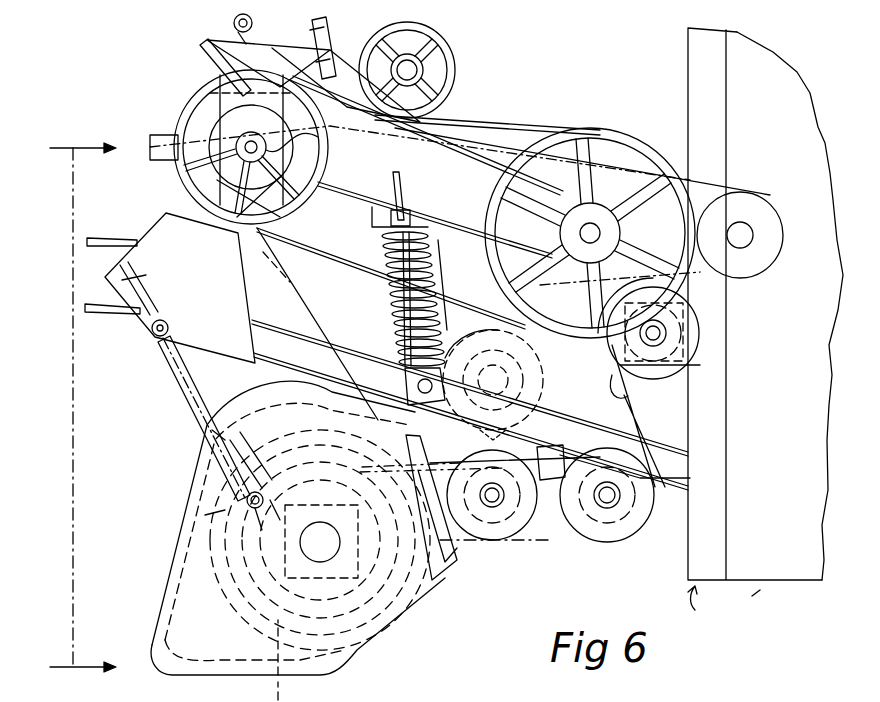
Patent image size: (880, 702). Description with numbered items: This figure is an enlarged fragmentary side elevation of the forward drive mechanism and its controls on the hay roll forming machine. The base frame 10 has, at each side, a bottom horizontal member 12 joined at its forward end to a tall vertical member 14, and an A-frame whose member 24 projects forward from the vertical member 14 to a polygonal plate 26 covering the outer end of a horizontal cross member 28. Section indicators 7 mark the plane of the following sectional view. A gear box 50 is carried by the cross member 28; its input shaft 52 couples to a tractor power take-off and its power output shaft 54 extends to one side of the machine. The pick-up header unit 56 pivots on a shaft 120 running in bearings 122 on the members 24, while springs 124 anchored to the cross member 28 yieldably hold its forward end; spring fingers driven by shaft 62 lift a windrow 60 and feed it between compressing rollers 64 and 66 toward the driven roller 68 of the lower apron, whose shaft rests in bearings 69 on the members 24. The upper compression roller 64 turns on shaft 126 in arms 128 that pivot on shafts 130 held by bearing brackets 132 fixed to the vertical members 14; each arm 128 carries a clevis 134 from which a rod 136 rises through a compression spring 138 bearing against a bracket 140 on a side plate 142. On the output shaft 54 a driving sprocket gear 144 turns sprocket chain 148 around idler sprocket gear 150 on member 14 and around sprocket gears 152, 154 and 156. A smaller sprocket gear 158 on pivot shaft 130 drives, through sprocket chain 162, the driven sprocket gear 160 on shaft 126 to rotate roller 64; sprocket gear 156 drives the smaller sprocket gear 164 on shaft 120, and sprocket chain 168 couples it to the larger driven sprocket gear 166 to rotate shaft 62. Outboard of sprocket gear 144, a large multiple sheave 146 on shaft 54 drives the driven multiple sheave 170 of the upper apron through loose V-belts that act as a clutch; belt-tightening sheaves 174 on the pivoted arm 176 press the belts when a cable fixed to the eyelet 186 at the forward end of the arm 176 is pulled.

The section line 7- 7 is at (71, 411).
The base frame 10 is at (707, 601).
The bottom horizontal member 12 is at (772, 588).
The vertical member 14 is at (708, 476).
The A-frame member 24 is at (365, 345).
The polygonal plate 26 is at (238, 303).
The horizontal cross member 28 is at (162, 225).
The gear box 50 is at (205, 110).
The input shaft 52 is at (163, 135).
The power output shaft 54 is at (287, 163).
The pick-up header unit 56 is at (205, 496).
The swath or windrow 60 is at (190, 598).
The shaft 62 is at (322, 542).
The upper compression roller 64 is at (391, 278).
The compressing roller 66 is at (525, 525).
The driven roller 68 is at (630, 530).
The bearings 69 is at (660, 505).
The shaft 120 is at (492, 495).
The bearings 122 is at (432, 507).
The springs 124 is at (188, 398).
The shaft 126 is at (505, 385).
The arms 128 is at (640, 416).
The pivot shafts 130 is at (660, 336).
The bearing brackets 132 is at (700, 360).
The clevises 134 is at (395, 400).
The rod 136 is at (412, 206).
The compression spring 138 is at (380, 265).
The bracket 140 is at (448, 226).
The side plate 142 is at (392, 180).
The sprocket gear 144 is at (310, 140).
The multiple sheave 146 is at (322, 38).
The sprocket chain 148 is at (498, 126).
The idler sprocket gear 150 is at (756, 210).
The sprocket gear 152 is at (696, 382).
The sprocket gear 154 is at (610, 530).
The sprocket gear 156 is at (515, 540).
The sprocket gear 158 is at (696, 335).
The driven sprocket gear 160 is at (520, 300).
The sprocket chain 162 is at (615, 262).
The sprocket gear 164 is at (487, 530).
The driven sprocket gear 166 is at (270, 686).
The sprocket chain 168 is at (398, 630).
The driven multiple sheave 170 is at (600, 130).
The belt-tightening sheaves 174 is at (452, 55).
The arm 176 is at (282, 48).
The eyelet 186 is at (232, 27).